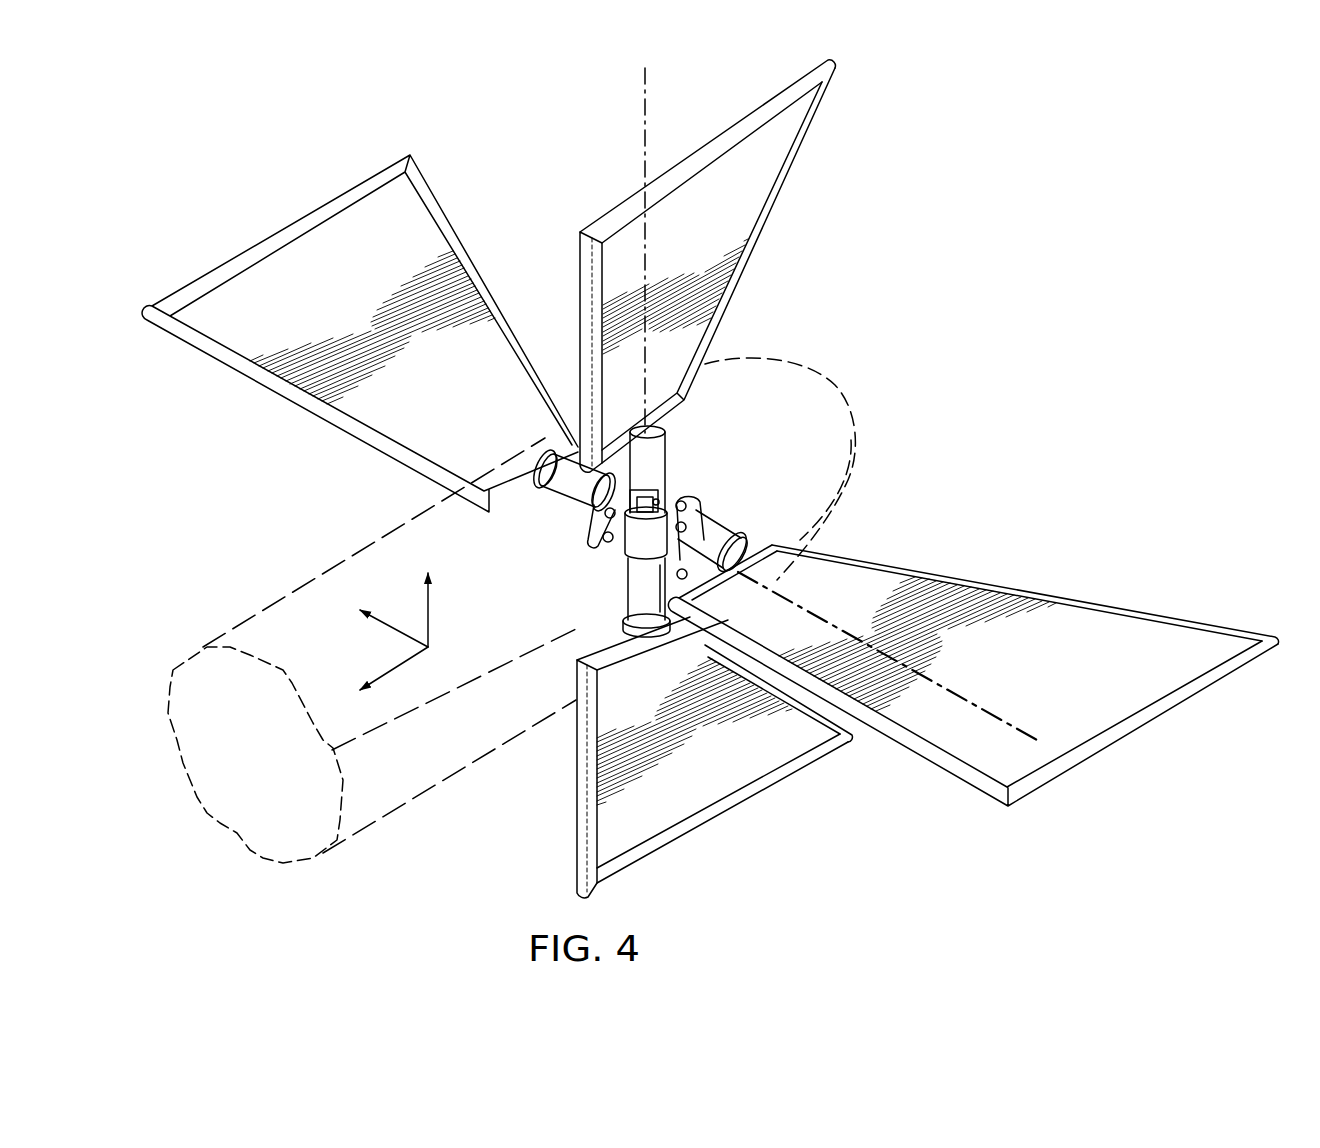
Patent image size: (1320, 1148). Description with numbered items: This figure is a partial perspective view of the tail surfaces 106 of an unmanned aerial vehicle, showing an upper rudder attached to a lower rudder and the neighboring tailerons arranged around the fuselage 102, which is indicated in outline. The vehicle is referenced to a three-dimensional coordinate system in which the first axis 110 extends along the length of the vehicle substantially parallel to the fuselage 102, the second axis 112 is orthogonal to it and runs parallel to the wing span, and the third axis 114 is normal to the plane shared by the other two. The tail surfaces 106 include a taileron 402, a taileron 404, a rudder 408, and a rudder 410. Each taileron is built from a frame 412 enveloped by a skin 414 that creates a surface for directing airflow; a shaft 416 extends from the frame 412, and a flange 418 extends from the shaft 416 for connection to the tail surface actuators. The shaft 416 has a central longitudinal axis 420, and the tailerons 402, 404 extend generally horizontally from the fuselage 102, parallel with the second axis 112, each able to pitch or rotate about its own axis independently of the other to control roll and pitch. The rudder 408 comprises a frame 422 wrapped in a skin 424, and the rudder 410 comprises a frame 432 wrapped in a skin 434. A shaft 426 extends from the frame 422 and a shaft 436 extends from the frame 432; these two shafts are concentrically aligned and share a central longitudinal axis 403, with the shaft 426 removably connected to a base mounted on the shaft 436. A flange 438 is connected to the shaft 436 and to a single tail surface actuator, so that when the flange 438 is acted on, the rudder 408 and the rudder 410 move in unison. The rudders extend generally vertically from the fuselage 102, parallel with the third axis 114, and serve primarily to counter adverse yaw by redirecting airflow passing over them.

The fuselage 102 is at (307, 580).
The tail surfaces 106 is at (700, 468).
The first axis 110 is at (395, 667).
The second axis 112 is at (397, 627).
The third axis 114 is at (432, 613).
The taileron 402 is at (973, 681).
The central longitudinal axis 403 is at (642, 92).
The taileron 404 is at (266, 240).
The rudder 408 is at (707, 255).
The rudder 410 is at (675, 757).
The frame 412 is at (920, 755).
The skin 414 is at (1083, 627).
The shaft 416 is at (823, 527).
The flange 418 is at (697, 510).
The central longitudinal axis 420 is at (1017, 723).
The frame 422 is at (783, 97).
The skin 424 is at (740, 208).
The shaft 426 is at (667, 452).
The frame 432 is at (575, 852).
The skin 434 is at (647, 830).
The shaft 436 is at (630, 603).
The flange 438 is at (630, 575).